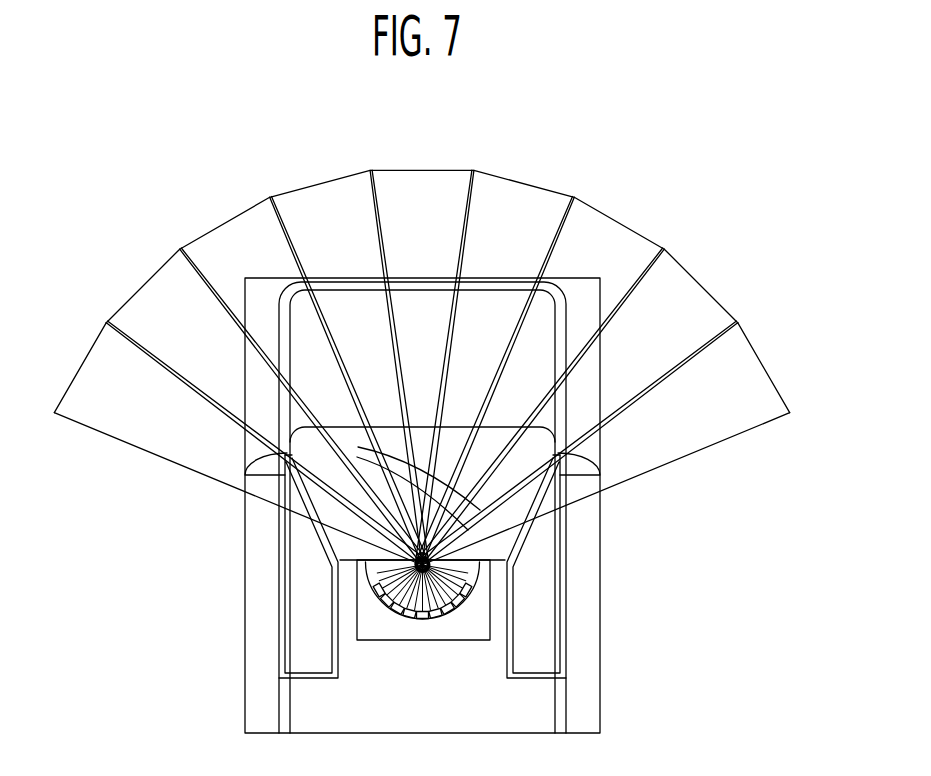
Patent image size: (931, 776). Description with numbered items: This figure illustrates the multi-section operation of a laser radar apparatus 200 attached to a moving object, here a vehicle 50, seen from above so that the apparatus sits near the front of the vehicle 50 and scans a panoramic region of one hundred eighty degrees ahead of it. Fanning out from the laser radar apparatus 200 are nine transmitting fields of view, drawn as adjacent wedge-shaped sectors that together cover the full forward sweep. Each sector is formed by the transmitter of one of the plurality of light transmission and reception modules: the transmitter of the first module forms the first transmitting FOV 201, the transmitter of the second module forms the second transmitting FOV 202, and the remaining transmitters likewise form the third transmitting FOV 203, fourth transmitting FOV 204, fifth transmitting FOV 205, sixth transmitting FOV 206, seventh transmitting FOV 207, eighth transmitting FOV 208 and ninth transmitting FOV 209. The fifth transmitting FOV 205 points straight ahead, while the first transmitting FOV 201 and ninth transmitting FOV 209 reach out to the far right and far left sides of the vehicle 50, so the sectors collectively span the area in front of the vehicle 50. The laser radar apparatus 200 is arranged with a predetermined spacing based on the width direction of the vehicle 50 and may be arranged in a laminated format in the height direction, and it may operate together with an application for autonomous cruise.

The vehicle 50 is at (562, 700).
The laser radar apparatus 200 is at (432, 641).
The first transmitting FOV 201 is at (768, 373).
The second transmitting FOV 202 is at (702, 284).
The third transmitting FOV 203 is at (619, 221).
The fourth transmitting FOV 204 is at (524, 183).
The fifth transmitting FOV 205 is at (424, 170).
The sixth transmitting FOV 206 is at (323, 184).
The seventh transmitting FOV 207 is at (228, 223).
The eighth transmitting FOV 208 is at (141, 288).
The ninth transmitting FOV 209 is at (79, 375).